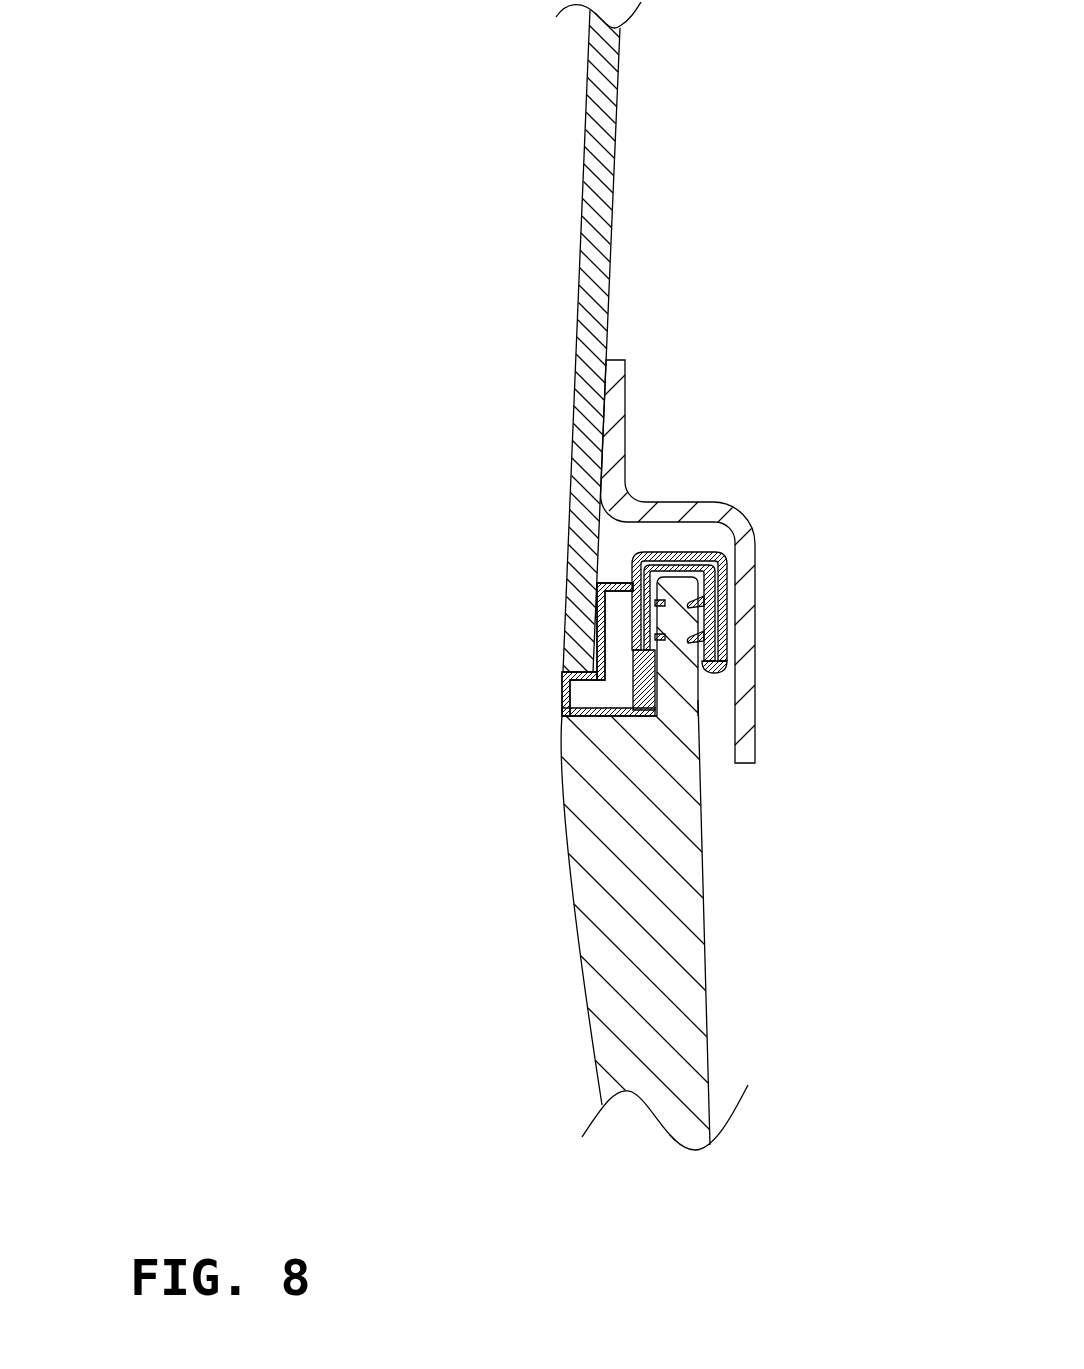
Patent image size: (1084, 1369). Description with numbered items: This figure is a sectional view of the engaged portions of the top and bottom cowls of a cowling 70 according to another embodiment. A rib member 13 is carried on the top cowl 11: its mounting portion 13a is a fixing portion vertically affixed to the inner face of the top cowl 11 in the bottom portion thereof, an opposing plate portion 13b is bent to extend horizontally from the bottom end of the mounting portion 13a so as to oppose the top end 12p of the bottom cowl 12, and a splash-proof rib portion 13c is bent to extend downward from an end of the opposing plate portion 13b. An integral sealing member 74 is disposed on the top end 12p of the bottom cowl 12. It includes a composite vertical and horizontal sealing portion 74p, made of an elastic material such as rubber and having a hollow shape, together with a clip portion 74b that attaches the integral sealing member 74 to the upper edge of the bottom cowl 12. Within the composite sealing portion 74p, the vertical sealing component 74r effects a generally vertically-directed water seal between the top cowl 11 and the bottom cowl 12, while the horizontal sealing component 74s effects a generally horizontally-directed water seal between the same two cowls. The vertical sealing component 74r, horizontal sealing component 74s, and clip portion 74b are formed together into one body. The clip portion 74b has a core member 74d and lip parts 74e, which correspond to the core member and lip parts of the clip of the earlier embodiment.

The cowling 70 is at (494, 155).
The top cowl 11 is at (583, 269).
The bottom cowl 12 is at (585, 887).
The top end of the bottom cowl 12p is at (677, 687).
The rib member 13 is at (774, 541).
The mounting portion 13a is at (615, 380).
The opposing plate portion 13b is at (692, 500).
The splash-proof rib portion 13c is at (747, 720).
The integral sealing member 74 is at (548, 697).
The composite vertical and horizontal sealing portion 74p is at (410, 603).
The horizontal sealing component 74s is at (598, 594).
The vertical sealing component 74r is at (576, 662).
The core member 74d is at (632, 566).
The clip portion 74b is at (712, 640).
The lip parts 74e is at (706, 605).